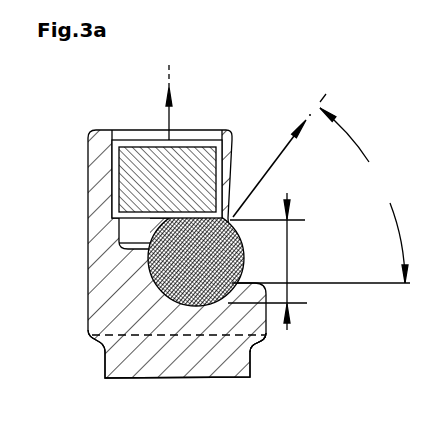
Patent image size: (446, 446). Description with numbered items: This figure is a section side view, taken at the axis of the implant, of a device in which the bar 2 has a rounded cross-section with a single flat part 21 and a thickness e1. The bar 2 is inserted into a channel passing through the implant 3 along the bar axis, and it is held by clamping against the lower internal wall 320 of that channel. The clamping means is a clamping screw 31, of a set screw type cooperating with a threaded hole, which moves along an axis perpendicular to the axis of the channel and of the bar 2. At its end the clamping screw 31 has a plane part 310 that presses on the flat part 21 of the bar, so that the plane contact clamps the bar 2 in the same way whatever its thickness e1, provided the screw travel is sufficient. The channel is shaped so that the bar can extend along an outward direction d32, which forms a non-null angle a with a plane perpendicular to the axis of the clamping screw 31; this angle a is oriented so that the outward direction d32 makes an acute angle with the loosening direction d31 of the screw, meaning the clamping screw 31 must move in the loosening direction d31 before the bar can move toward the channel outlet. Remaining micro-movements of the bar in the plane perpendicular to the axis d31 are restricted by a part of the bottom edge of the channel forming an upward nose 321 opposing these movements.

The bar 2 is at (91, 302).
The implant 3 is at (118, 356).
The flat part 21 is at (228, 226).
The clamping screw 31 is at (138, 152).
The plane part 310 is at (125, 229).
The internal wall 320 is at (249, 353).
The upward nose 321 is at (266, 300).
The loosening direction d31 is at (172, 117).
The outward direction d32 is at (275, 157).
The bar thickness e1 is at (272, 261).
The angle a is at (364, 195).